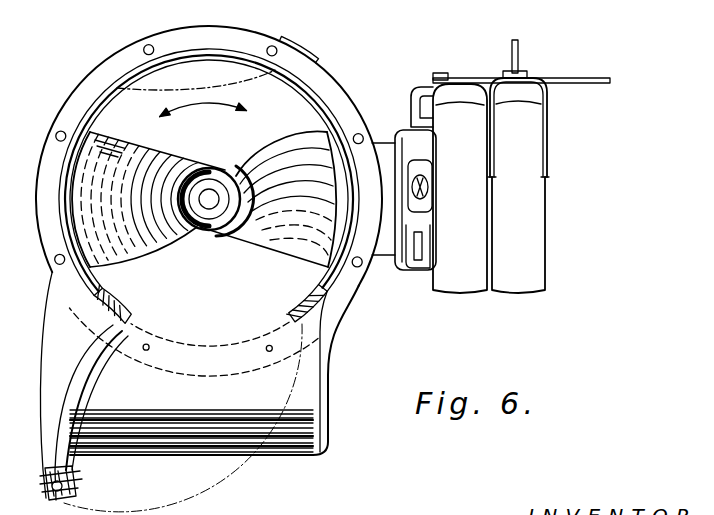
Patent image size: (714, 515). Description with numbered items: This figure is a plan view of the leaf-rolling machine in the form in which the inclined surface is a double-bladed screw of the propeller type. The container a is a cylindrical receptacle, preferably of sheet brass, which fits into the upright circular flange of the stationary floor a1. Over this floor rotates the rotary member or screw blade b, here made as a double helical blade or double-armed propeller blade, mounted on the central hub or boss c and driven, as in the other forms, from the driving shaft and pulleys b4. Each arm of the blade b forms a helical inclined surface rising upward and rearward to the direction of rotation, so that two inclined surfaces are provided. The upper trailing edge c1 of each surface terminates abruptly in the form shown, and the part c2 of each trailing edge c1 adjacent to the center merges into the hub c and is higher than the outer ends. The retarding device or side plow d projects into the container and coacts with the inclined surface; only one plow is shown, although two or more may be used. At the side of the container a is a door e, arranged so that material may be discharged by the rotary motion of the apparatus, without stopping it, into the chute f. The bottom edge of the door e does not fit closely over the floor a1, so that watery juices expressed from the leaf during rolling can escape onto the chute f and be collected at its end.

The container a is at (100, 107).
The stationary floor a1 is at (211, 398).
The rotary member or screw blade b is at (253, 243).
The pulleys b4 is at (491, 185).
The hub or boss c is at (213, 217).
The upper trailing edge c1 is at (140, 268).
The part of trailing edge adjacent to the center c2 is at (212, 172).
The retarding device or side plow d is at (163, 84).
The door e is at (80, 385).
The chute f is at (82, 403).